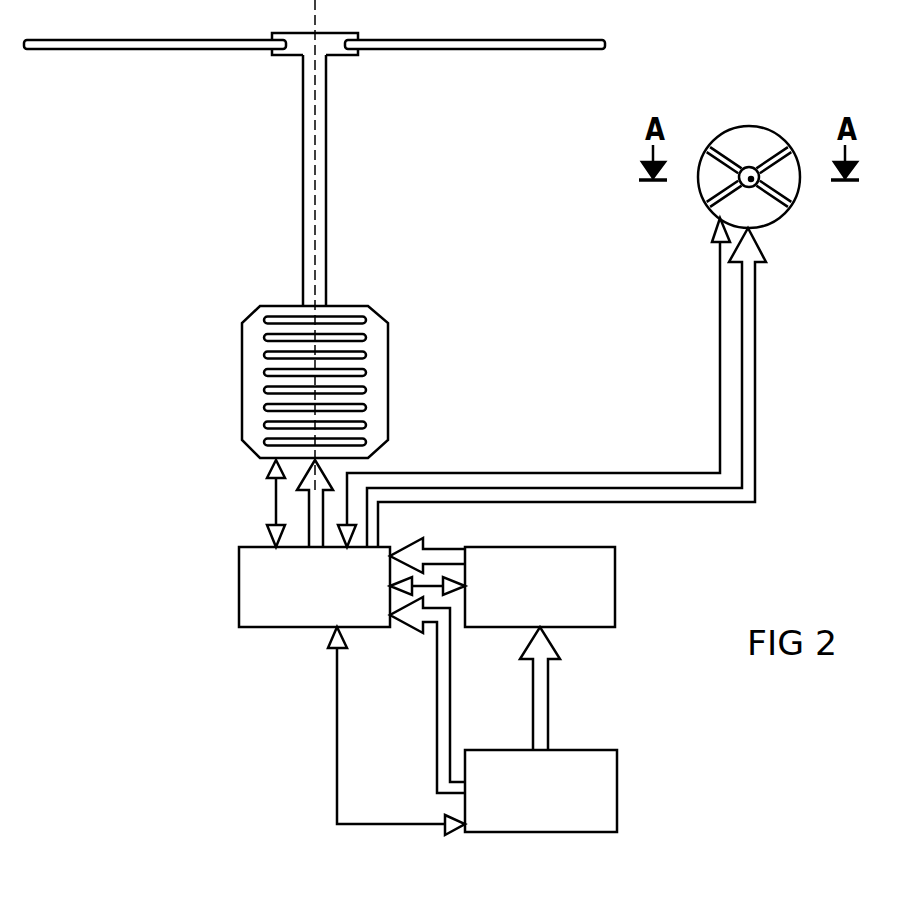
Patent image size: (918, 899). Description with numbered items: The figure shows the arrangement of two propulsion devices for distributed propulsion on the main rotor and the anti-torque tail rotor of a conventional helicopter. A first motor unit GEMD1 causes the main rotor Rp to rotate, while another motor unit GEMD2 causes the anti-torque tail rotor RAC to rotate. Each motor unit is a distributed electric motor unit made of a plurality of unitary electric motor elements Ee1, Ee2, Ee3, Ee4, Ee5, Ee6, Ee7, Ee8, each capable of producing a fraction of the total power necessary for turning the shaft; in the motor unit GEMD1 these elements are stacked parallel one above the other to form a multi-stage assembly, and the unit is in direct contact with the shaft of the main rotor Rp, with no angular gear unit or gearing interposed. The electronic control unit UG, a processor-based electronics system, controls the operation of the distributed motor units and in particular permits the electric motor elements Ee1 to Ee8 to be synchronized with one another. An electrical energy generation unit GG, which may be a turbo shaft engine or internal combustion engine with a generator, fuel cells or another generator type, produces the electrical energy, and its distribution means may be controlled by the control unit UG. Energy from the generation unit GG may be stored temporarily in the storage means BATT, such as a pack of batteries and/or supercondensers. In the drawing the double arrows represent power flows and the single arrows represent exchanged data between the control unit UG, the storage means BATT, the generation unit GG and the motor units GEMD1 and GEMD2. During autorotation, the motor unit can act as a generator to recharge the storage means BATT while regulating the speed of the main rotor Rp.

The main rotor Rp is at (325, 178).
The motor unit GEMD1 is at (372, 305).
The electric motor element Ee1 is at (263, 319).
The electric motor element Ee2 is at (367, 337).
The electric motor element Ee3 is at (263, 355).
The electric motor element Ee4 is at (367, 373).
The electric motor element Ee5 is at (263, 390).
The electric motor element Ee6 is at (367, 408).
The electric motor element Ee7 is at (263, 425).
The electric motor element Ee8 is at (367, 442).
The motor unit GEMD2 is at (765, 128).
The anti-torque tail rotor RAC is at (745, 173).
The electronic control unit UG is at (316, 627).
The storage means BATT is at (615, 583).
The electrical energy generation unit GG is at (617, 788).